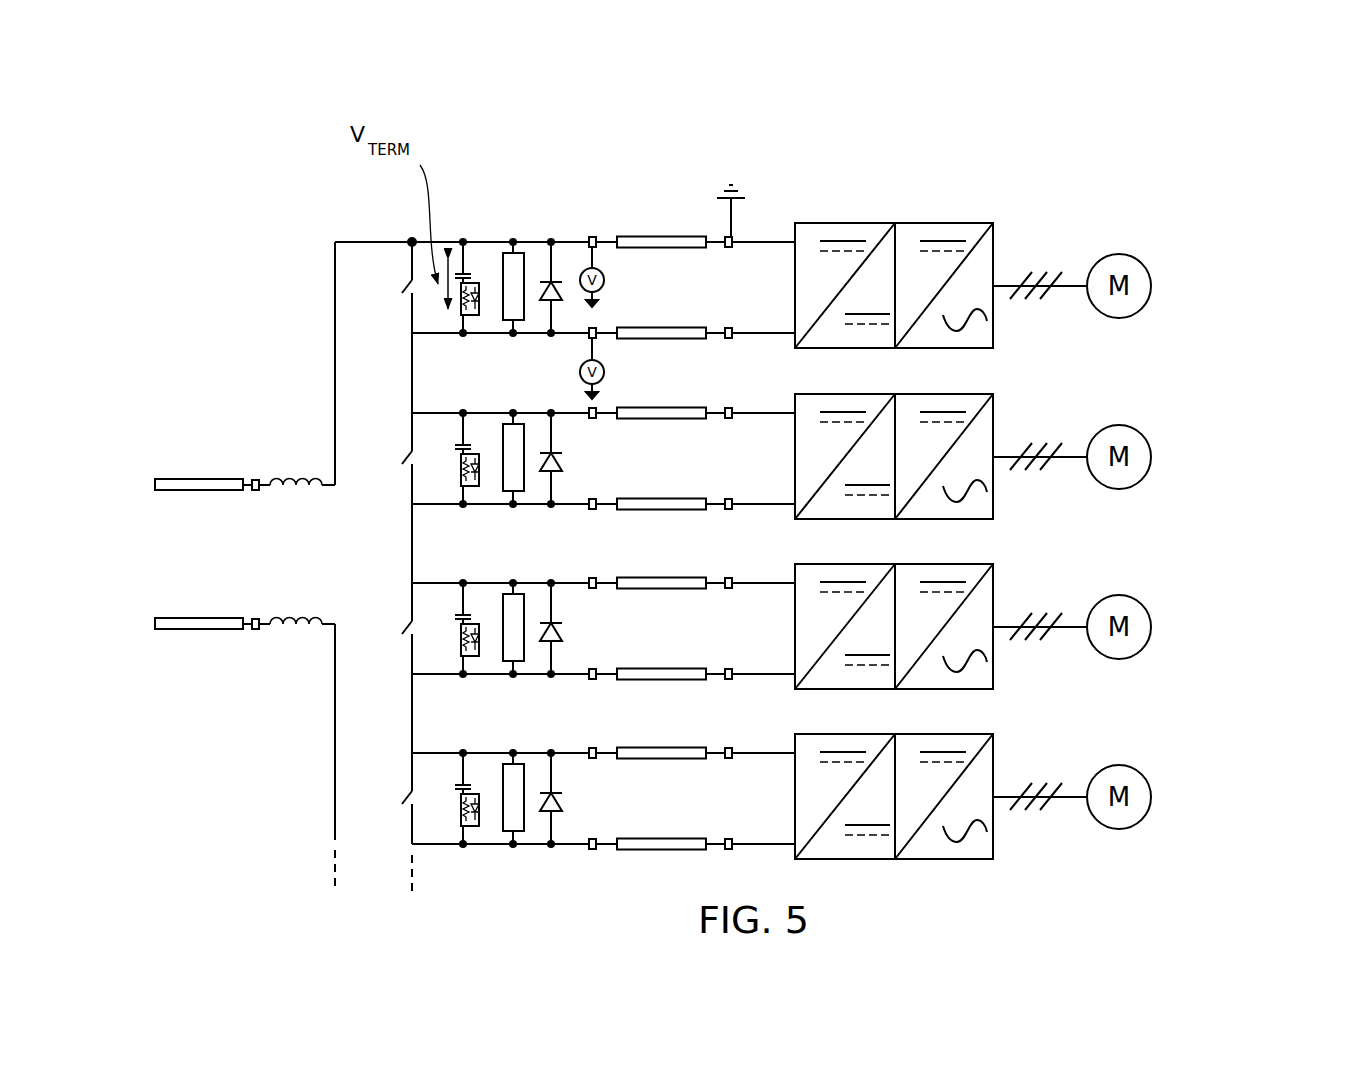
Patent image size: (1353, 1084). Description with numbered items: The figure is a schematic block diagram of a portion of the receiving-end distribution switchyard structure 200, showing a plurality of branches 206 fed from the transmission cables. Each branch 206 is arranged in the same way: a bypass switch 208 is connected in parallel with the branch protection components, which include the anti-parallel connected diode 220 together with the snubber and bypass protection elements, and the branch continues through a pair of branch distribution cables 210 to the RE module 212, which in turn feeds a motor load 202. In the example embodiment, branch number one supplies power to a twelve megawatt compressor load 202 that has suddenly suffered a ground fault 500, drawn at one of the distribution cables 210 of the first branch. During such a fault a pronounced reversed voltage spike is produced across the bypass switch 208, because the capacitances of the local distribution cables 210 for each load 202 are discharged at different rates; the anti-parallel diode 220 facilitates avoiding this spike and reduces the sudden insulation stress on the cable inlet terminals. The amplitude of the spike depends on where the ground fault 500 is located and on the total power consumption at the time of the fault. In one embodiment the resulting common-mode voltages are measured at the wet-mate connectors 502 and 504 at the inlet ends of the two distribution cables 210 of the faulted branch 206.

The receiving-end distribution switchyard structure 200 is at (518, 140).
The load 202 is at (1119, 254).
The branch 206 is at (1222, 279).
The bypass switch 208 is at (402, 283).
The branch distribution cable 210 is at (705, 249).
The RE module 212 is at (893, 223).
The anti-parallel connected diode 220 is at (549, 341).
The ground fault 500 is at (732, 217).
The wet-mate connector 502 is at (592, 237).
The wet-mate connector 504 is at (596, 337).